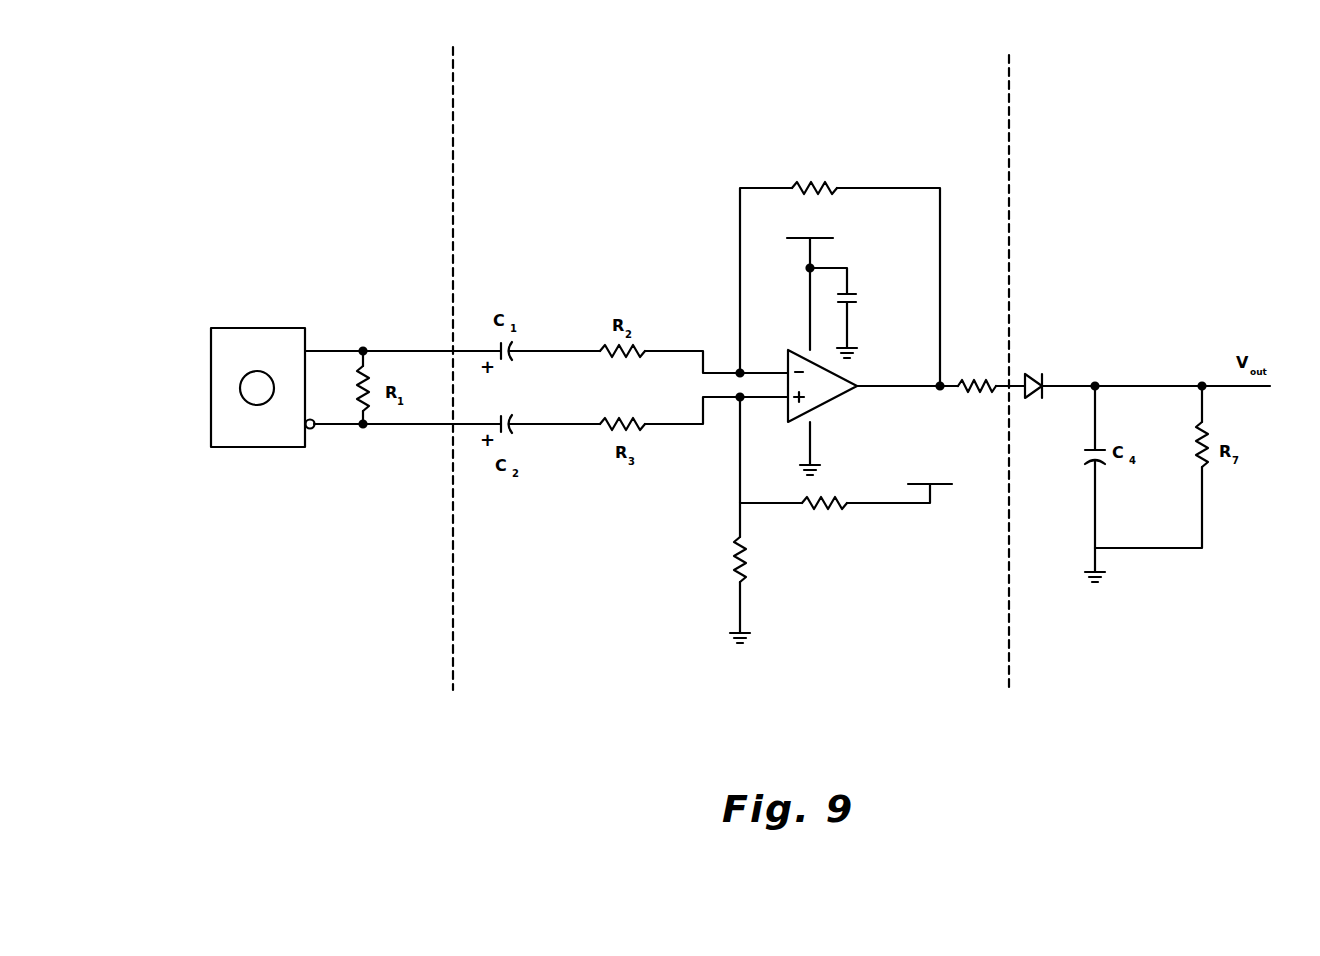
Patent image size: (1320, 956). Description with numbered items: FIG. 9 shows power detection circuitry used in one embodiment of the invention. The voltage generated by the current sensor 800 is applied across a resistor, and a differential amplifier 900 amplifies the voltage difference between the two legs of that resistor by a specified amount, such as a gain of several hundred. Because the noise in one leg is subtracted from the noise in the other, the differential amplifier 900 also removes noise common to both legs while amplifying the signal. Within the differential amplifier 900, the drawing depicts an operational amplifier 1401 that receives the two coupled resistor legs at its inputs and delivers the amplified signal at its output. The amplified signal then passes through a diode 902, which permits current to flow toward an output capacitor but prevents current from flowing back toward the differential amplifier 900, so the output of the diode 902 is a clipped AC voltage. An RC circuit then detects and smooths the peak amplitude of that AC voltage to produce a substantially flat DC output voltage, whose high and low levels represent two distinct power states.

The current sensor 800 is at (252, 338).
The differential amplifier 900 is at (808, 362).
The diode 902 is at (1028, 372).
The operational amplifier 1401 is at (826, 390).